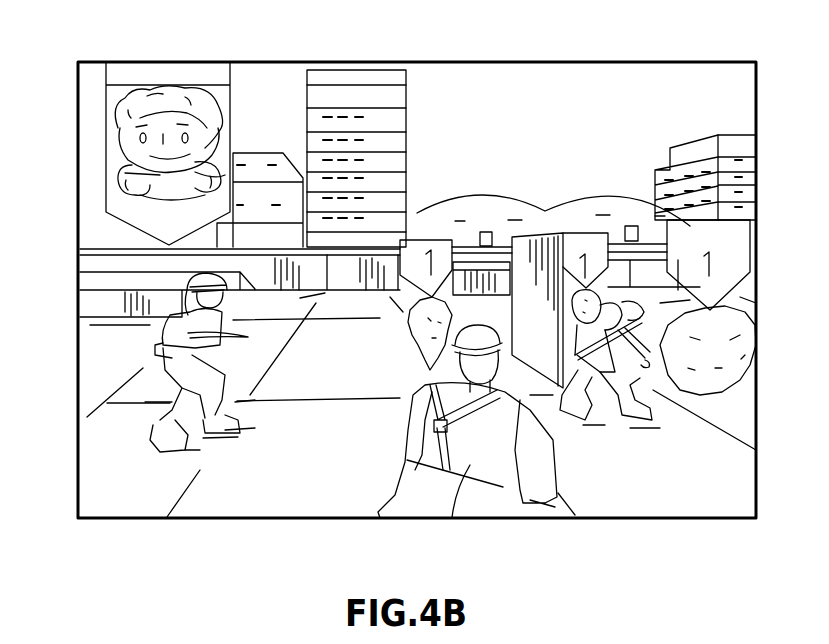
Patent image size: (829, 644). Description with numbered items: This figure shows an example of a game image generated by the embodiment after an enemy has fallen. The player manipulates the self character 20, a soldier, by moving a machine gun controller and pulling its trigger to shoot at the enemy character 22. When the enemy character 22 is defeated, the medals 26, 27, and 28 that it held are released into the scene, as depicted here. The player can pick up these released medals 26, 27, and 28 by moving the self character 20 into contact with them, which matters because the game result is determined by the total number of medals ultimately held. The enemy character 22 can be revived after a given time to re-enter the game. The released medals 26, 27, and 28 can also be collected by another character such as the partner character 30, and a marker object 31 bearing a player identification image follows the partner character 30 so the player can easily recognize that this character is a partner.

The self character 20 is at (468, 462).
The enemy character 22 is at (620, 372).
The medal 26 is at (690, 232).
The medal 27 is at (568, 238).
The medal 28 is at (445, 238).
The partner character 30 is at (170, 336).
The marker object 31 is at (135, 172).